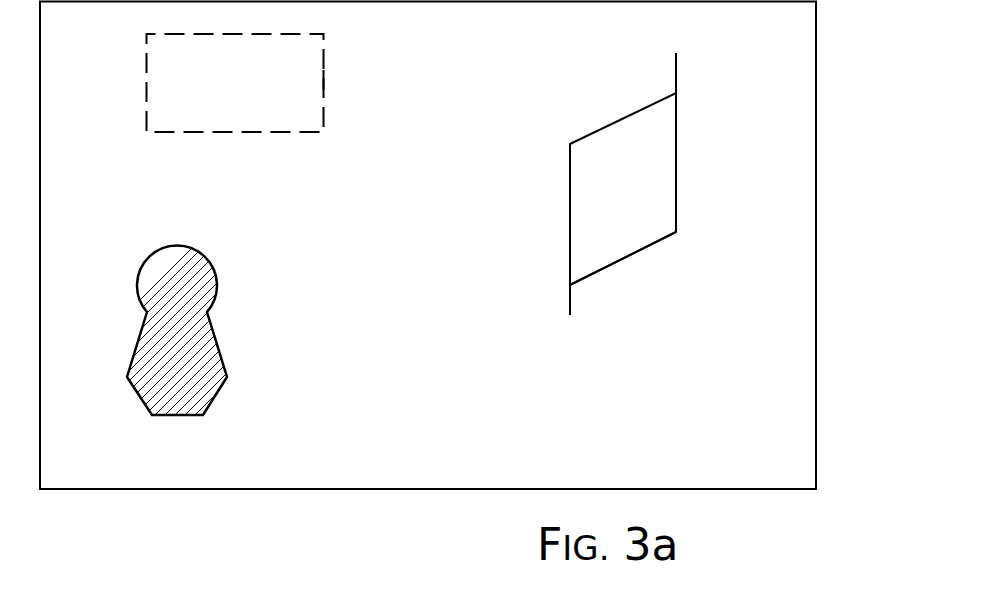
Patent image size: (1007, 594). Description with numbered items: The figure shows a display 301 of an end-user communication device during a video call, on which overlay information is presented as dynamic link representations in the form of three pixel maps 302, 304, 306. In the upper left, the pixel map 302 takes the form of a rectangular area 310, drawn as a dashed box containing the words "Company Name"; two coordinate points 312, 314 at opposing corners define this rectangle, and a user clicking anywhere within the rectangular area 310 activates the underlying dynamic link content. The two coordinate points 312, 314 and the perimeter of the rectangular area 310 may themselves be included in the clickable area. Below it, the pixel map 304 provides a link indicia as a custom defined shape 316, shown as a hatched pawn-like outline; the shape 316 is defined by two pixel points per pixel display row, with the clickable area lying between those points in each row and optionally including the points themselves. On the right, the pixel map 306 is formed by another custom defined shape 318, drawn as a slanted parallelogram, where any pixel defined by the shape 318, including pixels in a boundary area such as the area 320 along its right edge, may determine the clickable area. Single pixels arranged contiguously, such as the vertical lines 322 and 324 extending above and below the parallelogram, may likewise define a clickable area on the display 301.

The display 301 is at (240, 490).
The pixel map 302 is at (303, 63).
The pixel map 304 is at (190, 282).
The pixel map 306 is at (613, 158).
The rectangular area 310 is at (322, 82).
The coordinate point 312 is at (125, 27).
The coordinate point 314 is at (335, 140).
The custom defined shape 316 is at (210, 330).
The custom defined shape 318 is at (623, 260).
The boundary area 320 is at (657, 158).
The line 322 is at (676, 66).
The line 324 is at (568, 297).